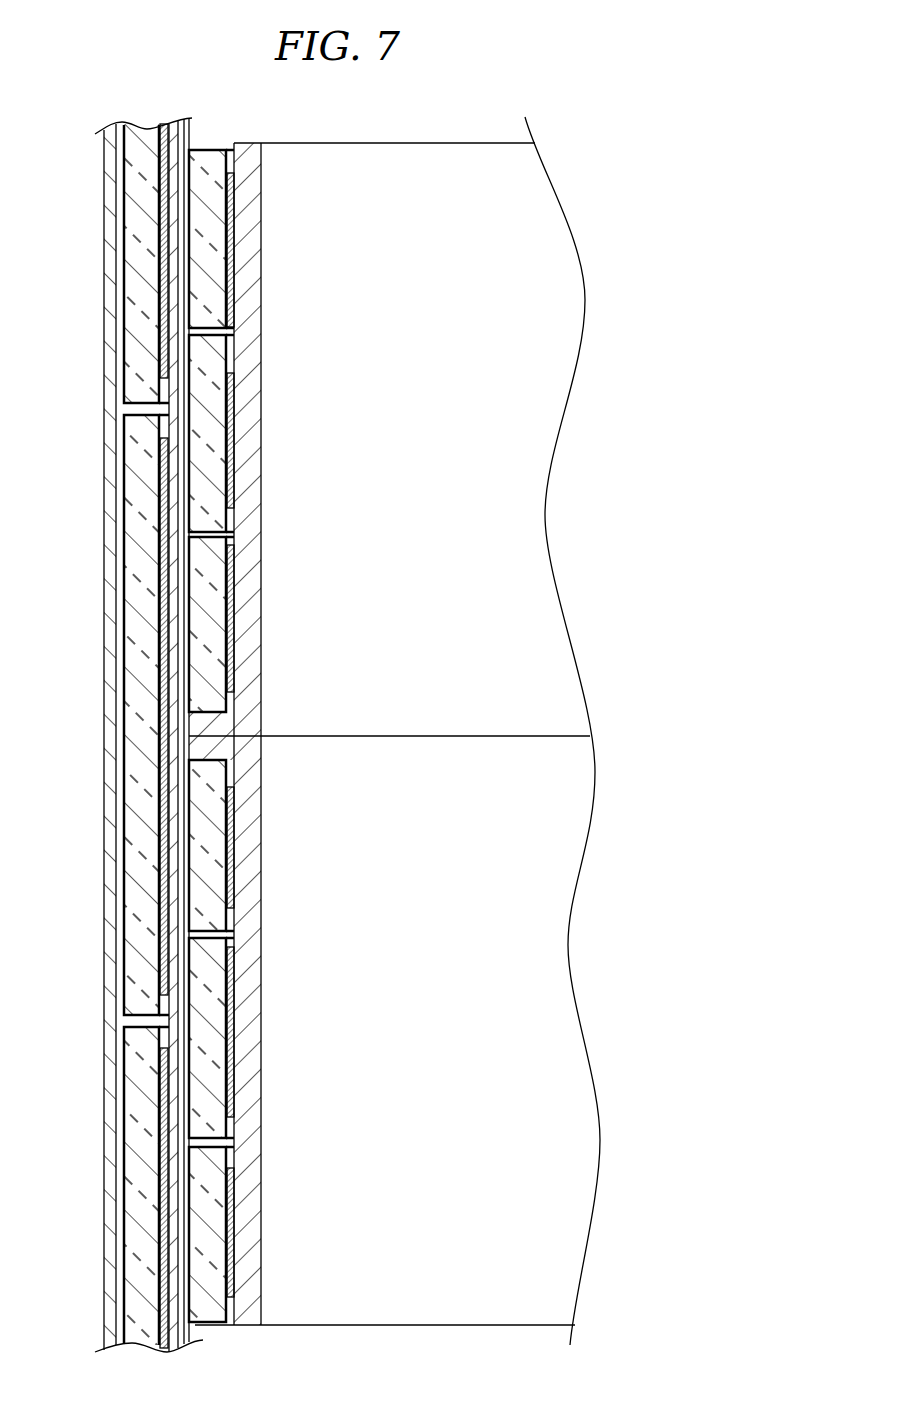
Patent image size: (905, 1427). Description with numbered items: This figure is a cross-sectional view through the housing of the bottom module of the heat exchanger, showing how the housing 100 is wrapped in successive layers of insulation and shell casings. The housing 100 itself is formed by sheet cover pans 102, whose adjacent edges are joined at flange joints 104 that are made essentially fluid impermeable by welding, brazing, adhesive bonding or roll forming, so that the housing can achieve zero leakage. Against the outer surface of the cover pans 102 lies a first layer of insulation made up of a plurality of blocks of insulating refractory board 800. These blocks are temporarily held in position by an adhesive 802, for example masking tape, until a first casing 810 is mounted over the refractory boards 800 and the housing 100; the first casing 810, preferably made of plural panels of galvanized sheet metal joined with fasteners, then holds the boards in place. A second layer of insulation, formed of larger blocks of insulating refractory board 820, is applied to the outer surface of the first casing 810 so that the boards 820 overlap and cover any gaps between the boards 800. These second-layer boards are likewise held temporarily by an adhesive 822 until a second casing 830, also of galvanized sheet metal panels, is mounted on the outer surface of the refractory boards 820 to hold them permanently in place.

The housing 100 is at (380, 139).
The cover pans 102 is at (250, 508).
The flange joints 104 is at (247, 737).
The refractory board 800 is at (205, 188).
The adhesive 802 is at (233, 266).
The first casing 810 is at (172, 361).
The refractory board 820 is at (145, 233).
The adhesive 822 is at (167, 314).
The second casing 830 is at (108, 1312).